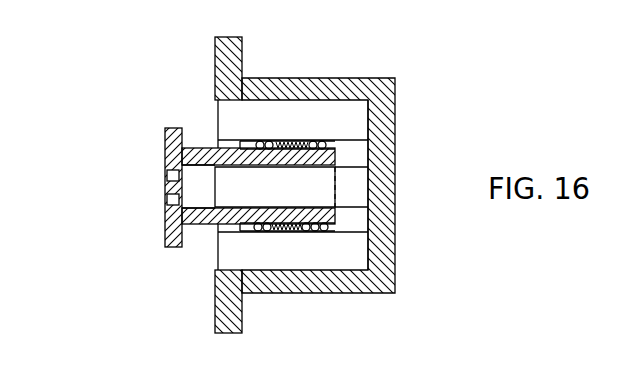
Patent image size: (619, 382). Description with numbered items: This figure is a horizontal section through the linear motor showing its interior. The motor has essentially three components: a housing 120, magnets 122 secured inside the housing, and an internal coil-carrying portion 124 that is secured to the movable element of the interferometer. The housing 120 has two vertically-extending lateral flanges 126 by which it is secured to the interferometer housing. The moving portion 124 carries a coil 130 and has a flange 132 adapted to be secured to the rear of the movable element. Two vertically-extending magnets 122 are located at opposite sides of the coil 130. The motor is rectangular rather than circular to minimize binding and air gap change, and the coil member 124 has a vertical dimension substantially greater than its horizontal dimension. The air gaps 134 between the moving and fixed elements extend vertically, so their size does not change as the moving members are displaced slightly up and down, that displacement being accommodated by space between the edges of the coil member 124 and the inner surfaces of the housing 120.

The housing 120 is at (403, 255).
The magnets 122 is at (333, 116).
The coil-carrying portion 124 is at (205, 226).
The lateral flanges 126 is at (241, 57).
The coil 130 is at (275, 232).
The flange 132 is at (165, 236).
The air gaps 134 is at (233, 142).